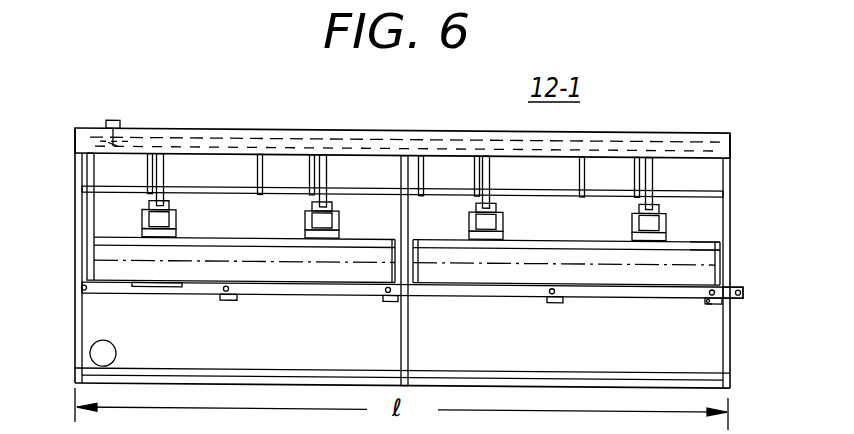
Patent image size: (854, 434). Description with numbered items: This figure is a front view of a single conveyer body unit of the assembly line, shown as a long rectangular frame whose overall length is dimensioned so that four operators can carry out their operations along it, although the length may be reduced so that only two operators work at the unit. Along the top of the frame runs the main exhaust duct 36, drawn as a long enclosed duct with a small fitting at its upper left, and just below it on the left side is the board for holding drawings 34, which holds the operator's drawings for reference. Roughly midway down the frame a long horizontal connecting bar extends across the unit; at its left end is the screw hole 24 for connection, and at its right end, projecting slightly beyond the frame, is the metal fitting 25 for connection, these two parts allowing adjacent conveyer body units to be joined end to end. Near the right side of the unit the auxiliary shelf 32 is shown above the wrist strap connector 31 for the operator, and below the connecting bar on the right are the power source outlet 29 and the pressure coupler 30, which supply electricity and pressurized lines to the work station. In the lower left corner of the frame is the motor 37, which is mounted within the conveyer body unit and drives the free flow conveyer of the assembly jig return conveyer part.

The main exhaust duct 36 is at (106, 126).
The board for holding drawings 34 is at (90, 168).
The screw hole for connection 24 is at (82, 287).
The motor 37 is at (90, 357).
The auxiliary shelf 32 is at (703, 238).
The wrist strap connector 31 is at (720, 263).
The metal fitting for connection 25 is at (740, 288).
The power source outlet 29 is at (722, 306).
The pressure coupler 30 is at (706, 301).